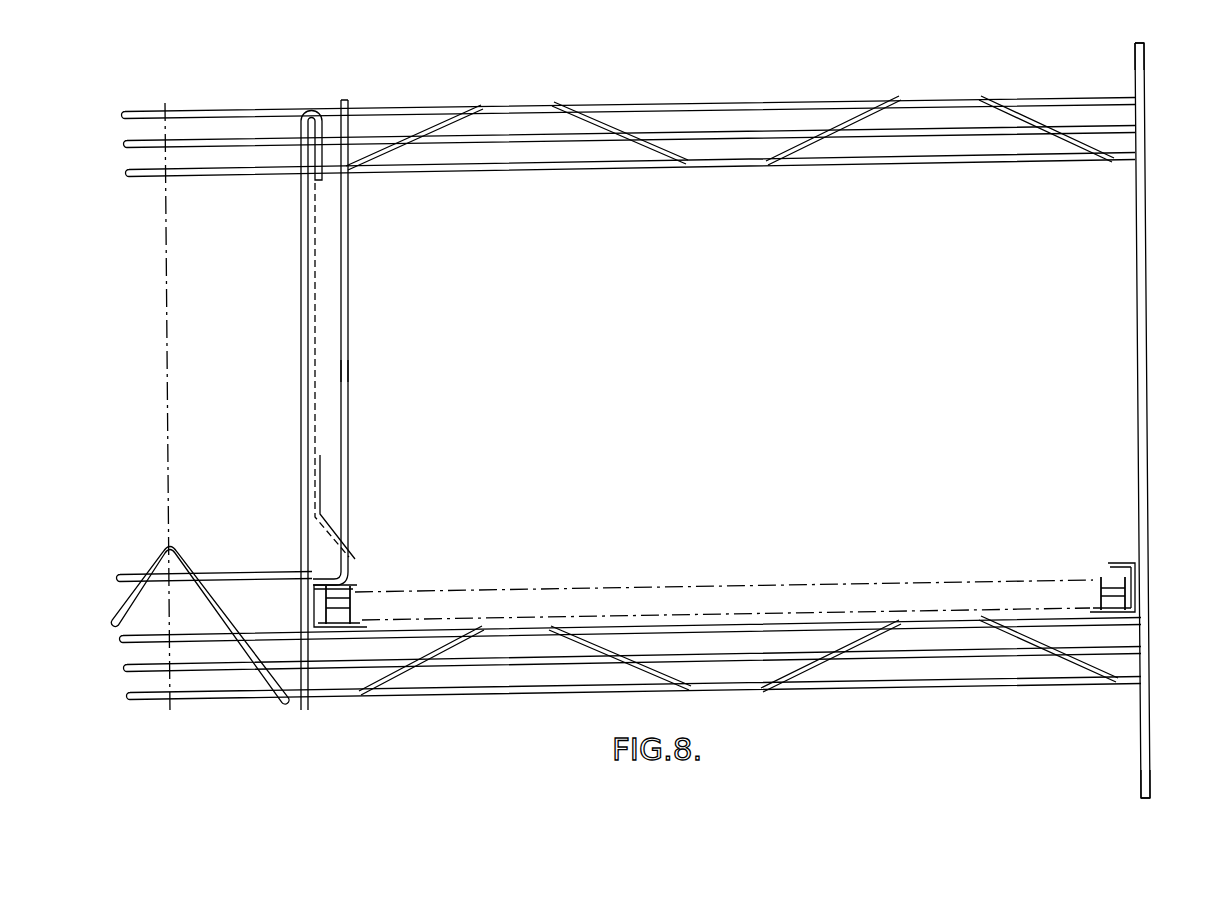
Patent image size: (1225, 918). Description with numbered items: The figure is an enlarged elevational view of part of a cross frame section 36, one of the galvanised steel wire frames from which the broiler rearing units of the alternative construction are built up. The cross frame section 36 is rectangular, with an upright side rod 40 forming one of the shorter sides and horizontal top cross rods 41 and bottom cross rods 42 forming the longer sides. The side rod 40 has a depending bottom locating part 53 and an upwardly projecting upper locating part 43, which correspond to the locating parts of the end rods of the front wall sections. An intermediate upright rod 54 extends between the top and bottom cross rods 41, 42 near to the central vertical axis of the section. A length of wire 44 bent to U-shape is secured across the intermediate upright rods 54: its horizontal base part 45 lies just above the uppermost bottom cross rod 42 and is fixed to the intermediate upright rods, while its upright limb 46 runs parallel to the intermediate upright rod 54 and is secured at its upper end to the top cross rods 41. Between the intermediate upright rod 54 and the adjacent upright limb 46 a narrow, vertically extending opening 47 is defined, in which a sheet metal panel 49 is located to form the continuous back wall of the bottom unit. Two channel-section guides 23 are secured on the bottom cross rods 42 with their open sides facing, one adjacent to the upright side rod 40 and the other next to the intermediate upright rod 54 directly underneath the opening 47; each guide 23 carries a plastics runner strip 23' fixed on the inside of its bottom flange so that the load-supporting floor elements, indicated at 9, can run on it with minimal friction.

The shelf 9 is at (800, 580).
The channel-section guide 23 is at (724, 577).
The plastics runner strip 23' is at (725, 577).
The cross frame section 36 is at (739, 108).
The upright side rod 40 is at (1136, 362).
The top cross rod 41 is at (709, 163).
The bottom cross rod 42 is at (921, 683).
The upper locating part 43 is at (1145, 58).
The U-shaped length of wire 44 is at (344, 371).
The horizontal base part 45 is at (232, 578).
The upright limb 46 is at (349, 321).
The opening 47 is at (330, 429).
The sheet metal panel 49 is at (316, 283).
The bottom locating part 53 is at (1151, 742).
The intermediate upright rod 54 is at (301, 357).